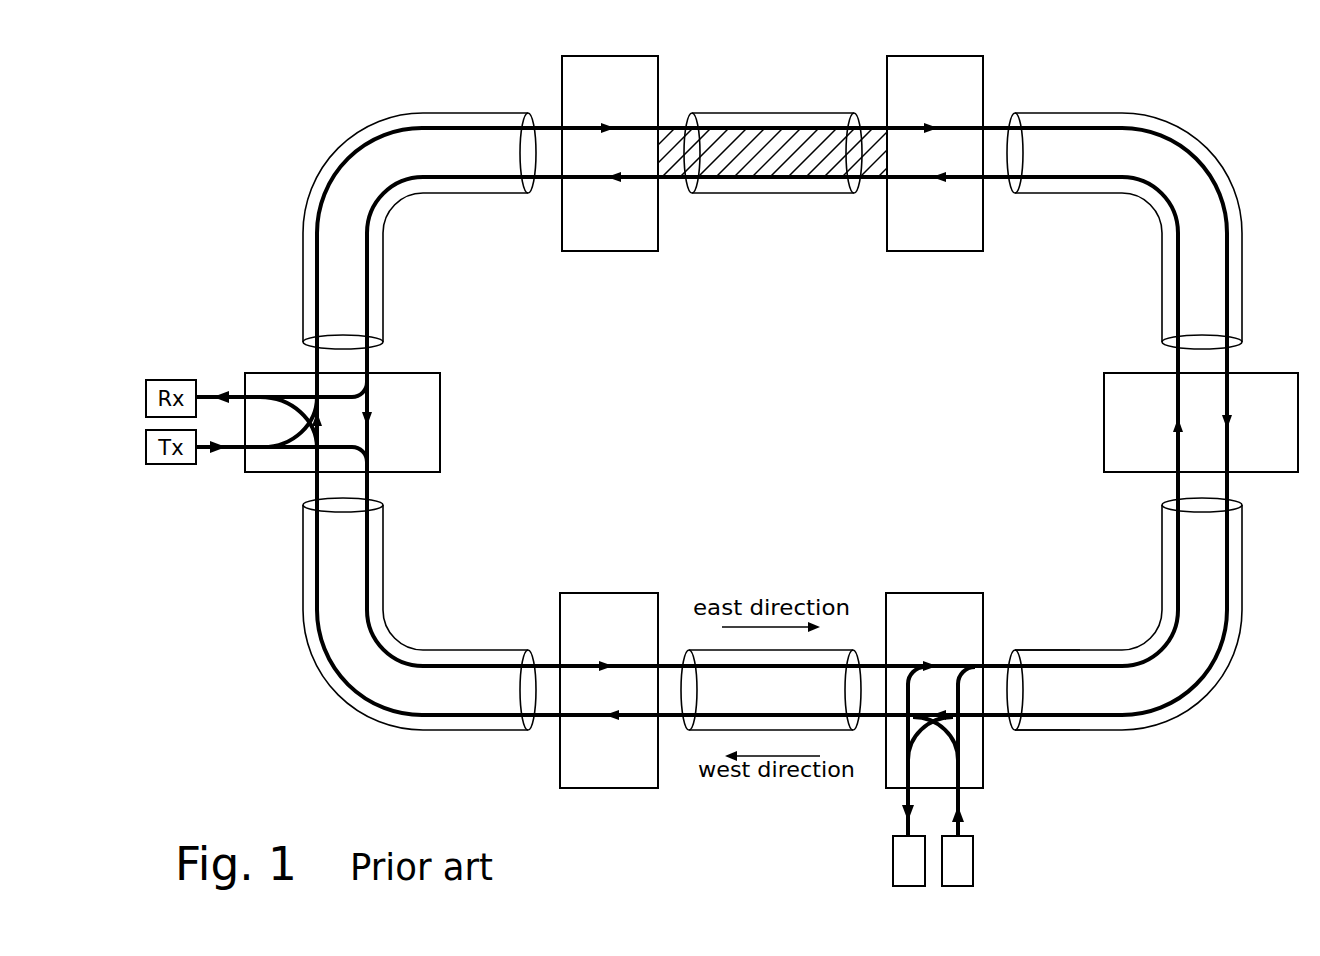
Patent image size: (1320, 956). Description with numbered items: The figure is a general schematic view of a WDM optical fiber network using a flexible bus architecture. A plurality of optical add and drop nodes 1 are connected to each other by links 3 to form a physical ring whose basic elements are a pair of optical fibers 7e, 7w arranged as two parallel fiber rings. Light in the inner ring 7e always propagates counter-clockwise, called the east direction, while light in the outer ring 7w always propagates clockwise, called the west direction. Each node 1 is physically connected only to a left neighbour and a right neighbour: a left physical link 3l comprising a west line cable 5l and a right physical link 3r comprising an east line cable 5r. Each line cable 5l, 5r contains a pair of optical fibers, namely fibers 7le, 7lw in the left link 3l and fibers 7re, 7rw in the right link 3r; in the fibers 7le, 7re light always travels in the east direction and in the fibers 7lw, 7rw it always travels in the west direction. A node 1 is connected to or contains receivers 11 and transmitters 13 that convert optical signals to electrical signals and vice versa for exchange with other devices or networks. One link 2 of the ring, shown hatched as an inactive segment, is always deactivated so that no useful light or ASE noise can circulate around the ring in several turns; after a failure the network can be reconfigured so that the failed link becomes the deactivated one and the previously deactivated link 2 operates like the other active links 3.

The optical add and drop node 1 is at (621, 594).
The deactivated link 2 is at (785, 226).
The link 3 is at (418, 230).
The left physical link 3l is at (766, 631).
The right physical link 3r is at (1116, 598).
The west line cable 5l is at (706, 655).
The east line cable 5r is at (1072, 655).
The outer fiber ring 7w is at (317, 358).
The inner fiber ring 7e is at (367, 360).
The left link east fiber 7le is at (868, 664).
The left link west fiber 7lw is at (871, 720).
The right link east fiber 7re is at (998, 664).
The right link west fiber 7rw is at (1001, 720).
The receiver 11 is at (893, 849).
The transmitter 13 is at (973, 850).